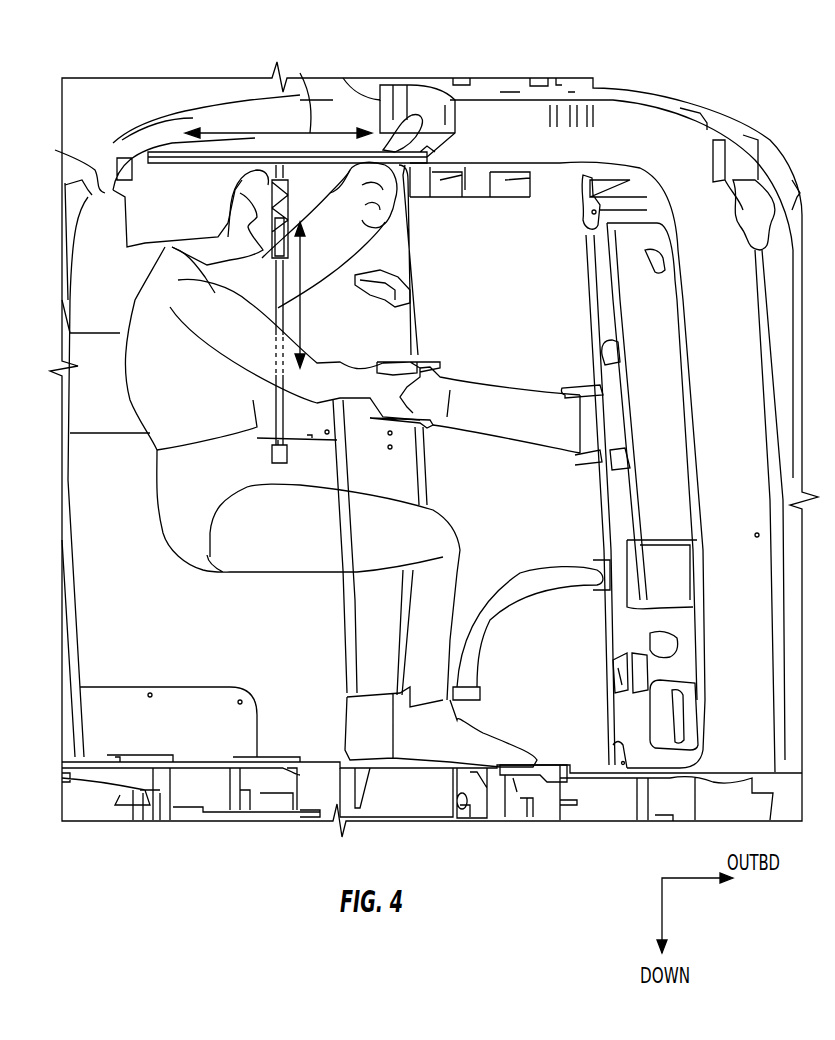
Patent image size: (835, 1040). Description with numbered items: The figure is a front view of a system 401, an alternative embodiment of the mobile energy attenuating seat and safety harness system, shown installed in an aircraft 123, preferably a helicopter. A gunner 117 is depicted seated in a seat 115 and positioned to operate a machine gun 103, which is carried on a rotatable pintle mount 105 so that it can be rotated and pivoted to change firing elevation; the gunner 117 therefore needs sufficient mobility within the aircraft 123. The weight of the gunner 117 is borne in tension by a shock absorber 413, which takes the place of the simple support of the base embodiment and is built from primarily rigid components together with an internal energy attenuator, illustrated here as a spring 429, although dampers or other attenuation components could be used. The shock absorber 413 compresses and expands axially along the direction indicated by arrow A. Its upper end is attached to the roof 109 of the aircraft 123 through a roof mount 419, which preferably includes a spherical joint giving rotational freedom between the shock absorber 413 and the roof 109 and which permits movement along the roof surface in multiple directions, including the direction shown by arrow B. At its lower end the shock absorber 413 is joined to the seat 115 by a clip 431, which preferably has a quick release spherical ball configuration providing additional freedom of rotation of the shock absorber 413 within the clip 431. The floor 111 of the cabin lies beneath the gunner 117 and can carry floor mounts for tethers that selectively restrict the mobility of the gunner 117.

The system 401 is at (138, 120).
The roof mount 419 is at (230, 151).
The roof 109 is at (360, 107).
The aircraft 123 is at (606, 92).
The gunner 117 is at (122, 190).
The spring 429 is at (273, 192).
The shock absorber 413 is at (275, 333).
The machine gun 103 is at (480, 393).
The seat 115 is at (153, 497).
The clip 431 is at (288, 457).
The pintle mount 105 is at (493, 630).
The floor 111 is at (503, 803).
The direction arrow A is at (303, 325).
The arrow B is at (310, 131).